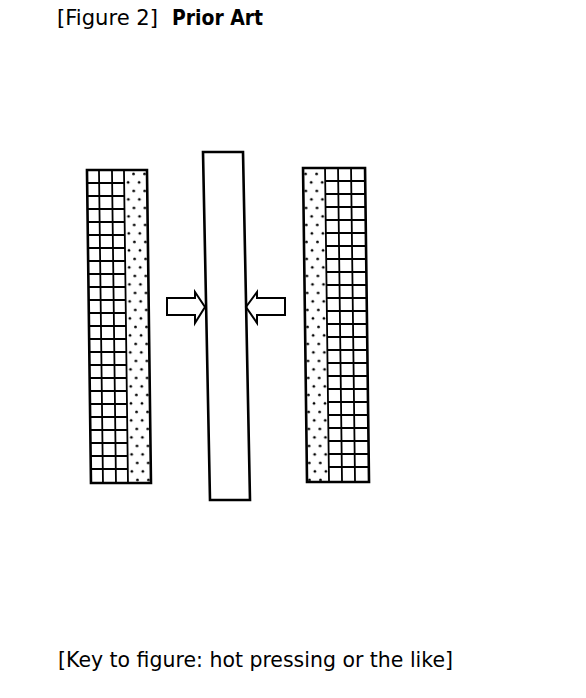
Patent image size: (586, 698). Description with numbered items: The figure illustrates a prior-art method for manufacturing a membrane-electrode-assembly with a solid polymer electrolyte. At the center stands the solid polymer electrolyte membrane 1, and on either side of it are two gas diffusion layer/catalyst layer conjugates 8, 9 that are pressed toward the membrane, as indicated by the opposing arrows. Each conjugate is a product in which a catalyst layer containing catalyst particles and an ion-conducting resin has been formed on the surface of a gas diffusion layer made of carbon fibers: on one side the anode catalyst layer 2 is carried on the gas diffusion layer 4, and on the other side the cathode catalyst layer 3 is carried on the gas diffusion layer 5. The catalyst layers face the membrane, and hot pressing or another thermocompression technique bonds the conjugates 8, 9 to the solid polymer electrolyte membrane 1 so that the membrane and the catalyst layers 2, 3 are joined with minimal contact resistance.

The solid polymer electrolyte membrane 1 is at (227, 479).
The anode catalyst layer 2 is at (142, 483).
The cathode catalyst layer 3 is at (313, 482).
The gas diffusion layer 4 is at (113, 483).
The gas diffusion layer 5 is at (350, 482).
The gas diffusion layer/catalyst layer conjugate 8 is at (85, 551).
The gas diffusion layer/catalyst layer conjugate 9 is at (303, 548).